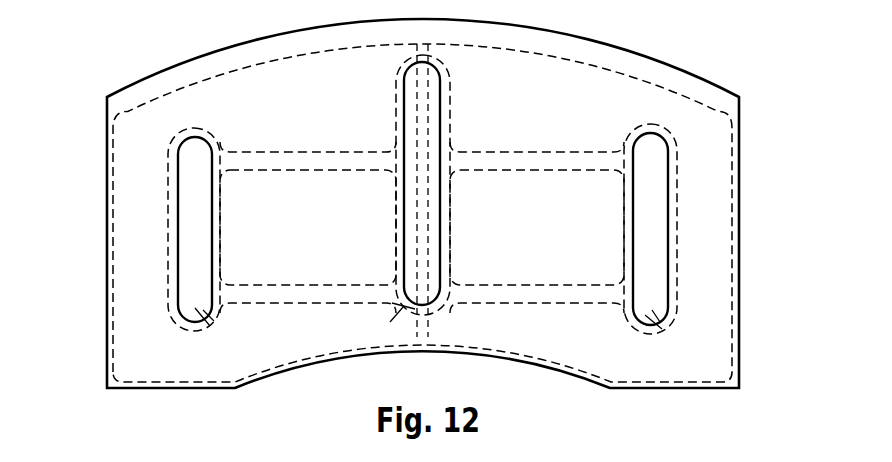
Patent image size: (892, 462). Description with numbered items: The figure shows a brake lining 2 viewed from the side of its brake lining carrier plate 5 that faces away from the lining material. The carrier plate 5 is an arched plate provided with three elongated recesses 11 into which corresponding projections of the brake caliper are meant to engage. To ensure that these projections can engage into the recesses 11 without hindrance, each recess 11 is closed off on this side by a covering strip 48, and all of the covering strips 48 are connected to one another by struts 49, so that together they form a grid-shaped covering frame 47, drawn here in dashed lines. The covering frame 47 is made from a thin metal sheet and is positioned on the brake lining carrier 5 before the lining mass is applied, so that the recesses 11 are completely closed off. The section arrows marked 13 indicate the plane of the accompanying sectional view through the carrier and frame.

The brake lining 2 is at (683, 58).
The brake lining carrier plate 5 is at (717, 335).
The recess 11 is at (212, 326).
The recess 13 is at (97, 222).
The covering frame 47 is at (543, 155).
The covering strip 48 is at (451, 103).
The strut 49 is at (296, 152).